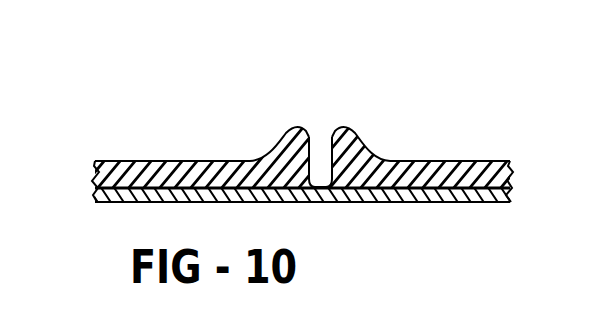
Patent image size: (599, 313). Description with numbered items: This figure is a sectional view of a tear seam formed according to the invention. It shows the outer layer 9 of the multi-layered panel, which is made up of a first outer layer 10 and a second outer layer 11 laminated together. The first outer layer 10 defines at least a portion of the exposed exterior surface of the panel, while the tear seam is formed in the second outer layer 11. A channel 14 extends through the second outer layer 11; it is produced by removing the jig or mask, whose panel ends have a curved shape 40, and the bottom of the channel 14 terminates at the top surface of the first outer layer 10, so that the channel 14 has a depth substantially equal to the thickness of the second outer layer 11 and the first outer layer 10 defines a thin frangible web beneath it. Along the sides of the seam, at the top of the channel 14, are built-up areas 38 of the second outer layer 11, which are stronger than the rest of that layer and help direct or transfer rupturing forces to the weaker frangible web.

The outer layer 9 is at (83, 157).
The first outer layer 10 is at (478, 198).
The second outer layer 11 is at (492, 162).
The channel 14 is at (325, 123).
The built-up areas 38 is at (293, 143).
The curved shape 40 is at (333, 188).